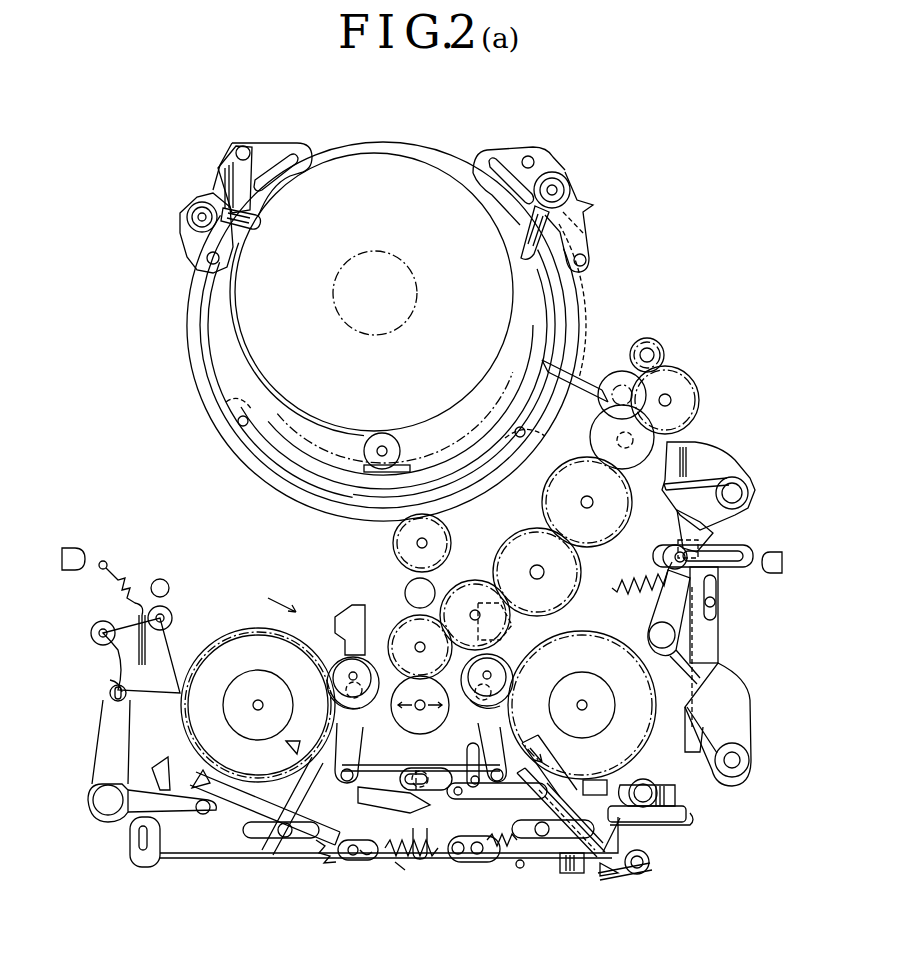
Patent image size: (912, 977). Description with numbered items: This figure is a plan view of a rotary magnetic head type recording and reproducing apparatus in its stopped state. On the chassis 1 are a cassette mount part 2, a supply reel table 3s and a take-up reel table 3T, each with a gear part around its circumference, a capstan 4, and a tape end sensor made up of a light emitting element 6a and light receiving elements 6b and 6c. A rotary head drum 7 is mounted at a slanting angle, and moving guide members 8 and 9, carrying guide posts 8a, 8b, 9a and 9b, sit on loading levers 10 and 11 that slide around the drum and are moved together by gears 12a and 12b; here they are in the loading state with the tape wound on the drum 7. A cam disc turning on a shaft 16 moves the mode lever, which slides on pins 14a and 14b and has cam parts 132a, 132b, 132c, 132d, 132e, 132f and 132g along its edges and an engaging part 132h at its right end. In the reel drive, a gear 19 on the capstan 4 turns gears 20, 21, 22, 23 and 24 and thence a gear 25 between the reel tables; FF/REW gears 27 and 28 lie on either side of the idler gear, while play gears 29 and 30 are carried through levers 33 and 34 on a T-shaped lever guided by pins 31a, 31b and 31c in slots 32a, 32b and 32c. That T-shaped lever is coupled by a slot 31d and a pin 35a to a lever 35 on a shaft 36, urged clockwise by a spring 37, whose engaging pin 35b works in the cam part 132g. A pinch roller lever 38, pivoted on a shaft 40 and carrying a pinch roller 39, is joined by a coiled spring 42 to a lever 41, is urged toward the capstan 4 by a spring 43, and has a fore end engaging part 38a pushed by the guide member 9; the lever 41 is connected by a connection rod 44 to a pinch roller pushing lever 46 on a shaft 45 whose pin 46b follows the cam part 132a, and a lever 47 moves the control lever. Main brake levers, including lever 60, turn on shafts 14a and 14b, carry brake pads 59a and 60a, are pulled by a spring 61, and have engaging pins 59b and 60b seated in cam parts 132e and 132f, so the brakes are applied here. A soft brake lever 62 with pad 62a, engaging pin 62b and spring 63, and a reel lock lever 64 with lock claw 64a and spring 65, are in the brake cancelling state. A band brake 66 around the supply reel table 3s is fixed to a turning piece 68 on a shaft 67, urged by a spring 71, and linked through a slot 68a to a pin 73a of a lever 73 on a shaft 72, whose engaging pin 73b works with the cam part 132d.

The chassis 1 is at (695, 234).
The cassette mount part 2 is at (294, 547).
The supply reel table 3s is at (235, 638).
The take-up reel table 3T is at (595, 648).
The capstan 4 is at (652, 355).
The light emitting element 6a is at (410, 590).
The light receiving element 6b is at (70, 550).
The light receiving element 6c is at (775, 550).
The rotary head drum 7 is at (440, 154).
The moving guide member 8 is at (178, 219).
The guide post 8a is at (232, 185).
The guide post 8b is at (200, 215).
The moving guide member 9 is at (592, 206).
The guide post 9a is at (548, 222).
The guide post 9b is at (563, 185).
The loading lever 10 is at (298, 150).
The loading lever 11 is at (510, 146).
The gear 12a is at (383, 443).
The gear 12b is at (442, 530).
The pin 14a is at (285, 840).
The pin 14b is at (585, 862).
The shaft 16 is at (398, 690).
The gear 19 is at (648, 345).
The gear 20 is at (685, 395).
The gear 21 is at (600, 437).
The gear 22 is at (560, 490).
The gear 23 is at (515, 550).
The gear 24 is at (473, 595).
The gear 25 is at (402, 632).
The FF/REW gear 27 is at (340, 665).
The FF/REW gear 28 is at (506, 668).
The play gear 29 is at (335, 700).
The play gear 30 is at (500, 700).
The pin 31a is at (393, 852).
The pin 31b is at (470, 770).
The pin 31c is at (445, 862).
The slot 31d is at (420, 771).
The slot 32a is at (360, 745).
The slot 32b is at (463, 745).
The slot 32c is at (420, 860).
The lever 33 is at (342, 610).
The lever 34 is at (497, 622).
The lever 35 is at (630, 874).
The pin 35a is at (402, 780).
The engaging pin 35b is at (590, 874).
The shaft 36 is at (640, 874).
The spring 37 is at (652, 862).
The pinch roller lever 38 is at (700, 441).
The fore end engaging part 38a is at (578, 400).
The pinch roller 39 is at (618, 375).
The shaft 40 is at (748, 492).
The lever 41 is at (676, 528).
The coiled spring 42 is at (720, 478).
The spring 43 is at (627, 580).
The connection rod 44 is at (665, 605).
The shaft 45 is at (734, 778).
The pinch roller pushing lever 46 is at (736, 700).
The pin 46b is at (648, 790).
The lever 47 is at (720, 628).
The brake pad 59a is at (298, 755).
The engaging pin 59b is at (365, 856).
The main brake lever 60 is at (565, 860).
The brake pad 60a is at (535, 750).
The engaging pin 60b is at (495, 858).
The spring 61 is at (452, 853).
The soft brake lever 62 is at (545, 782).
The pad 62a is at (600, 780).
The engaging pin 62b is at (470, 863).
The spring 63 is at (540, 840).
The reel lock lever 64 is at (218, 790).
The lock claw 64a is at (205, 780).
The spring 65 is at (335, 862).
The band brake 66 is at (170, 645).
The shaft 67 is at (100, 622).
The turning piece 68 is at (168, 607).
The slot 68a is at (112, 685).
The spring 71 is at (133, 600).
The shaft 72 is at (108, 812).
The lever 73 is at (132, 717).
The pin 73a is at (110, 692).
The engaging pin 73b is at (204, 815).
The cam part 132a is at (655, 822).
The cam part 132b is at (405, 806).
The cam part 132c is at (400, 872).
The cam part 132d is at (165, 862).
The cam part 132e is at (353, 860).
The cam part 132f is at (518, 868).
The cam part 132g is at (618, 873).
The engaging part 132h is at (690, 822).